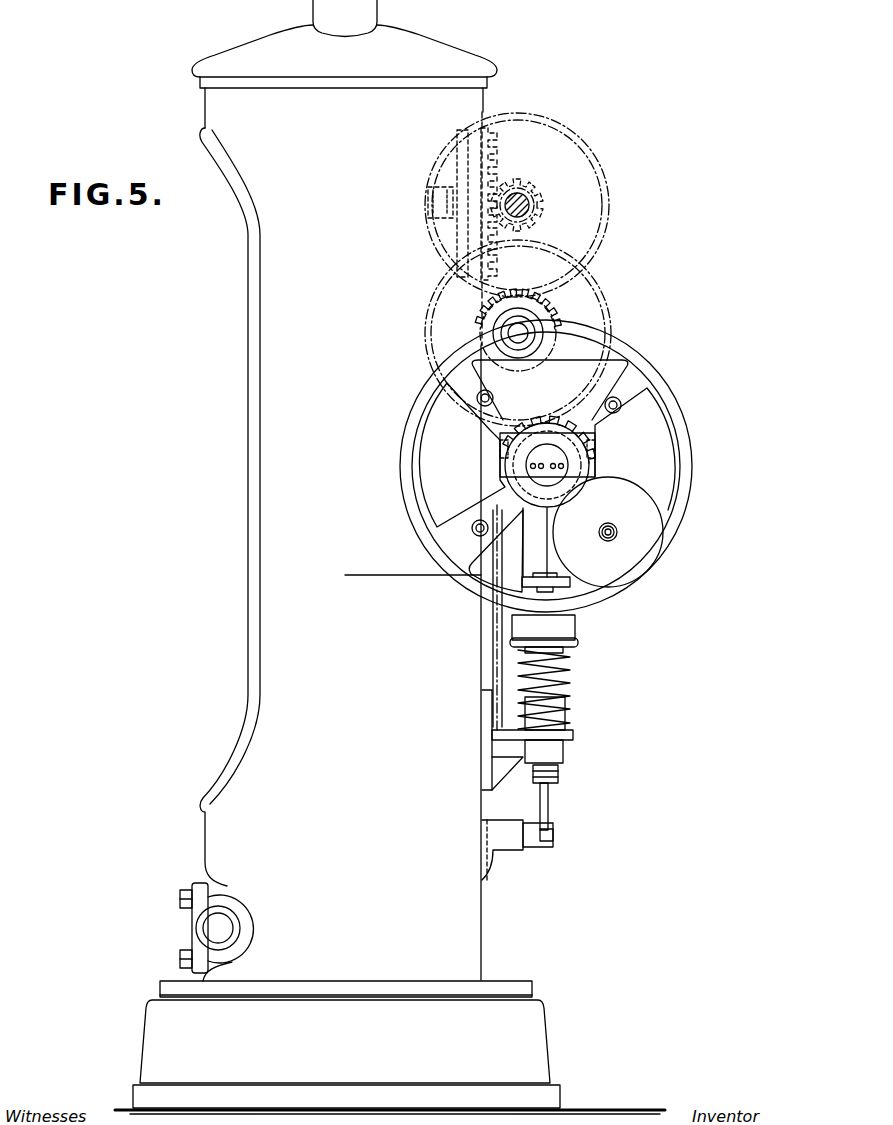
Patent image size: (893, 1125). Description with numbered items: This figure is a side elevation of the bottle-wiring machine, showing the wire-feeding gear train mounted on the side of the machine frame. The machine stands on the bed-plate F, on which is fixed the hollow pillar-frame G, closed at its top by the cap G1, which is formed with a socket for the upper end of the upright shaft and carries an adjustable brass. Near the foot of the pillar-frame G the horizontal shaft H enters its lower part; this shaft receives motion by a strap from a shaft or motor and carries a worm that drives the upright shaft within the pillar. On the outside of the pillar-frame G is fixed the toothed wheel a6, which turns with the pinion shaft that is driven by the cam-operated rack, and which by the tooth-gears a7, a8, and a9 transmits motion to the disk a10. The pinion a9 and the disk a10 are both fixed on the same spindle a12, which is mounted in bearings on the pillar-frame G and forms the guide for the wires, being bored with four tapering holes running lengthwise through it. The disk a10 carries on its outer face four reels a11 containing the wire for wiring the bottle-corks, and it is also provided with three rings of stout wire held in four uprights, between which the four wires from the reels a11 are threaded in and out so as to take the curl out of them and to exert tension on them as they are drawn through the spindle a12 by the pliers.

The cap G1 is at (344, 44).
The pillar-frame G is at (481, 508).
The horizontal shaft H is at (216, 928).
The bed-plate F is at (390, 1047).
The toothed wheel a6 is at (529, 205).
The tooth-gear a7 is at (520, 330).
The tooth-gear a8 is at (529, 333).
The pinion a9 is at (595, 462).
The disk a10 is at (417, 462).
The reel a11 is at (608, 532).
The spindle a12 is at (547, 465).
The bolts a'' is at (476, 463).